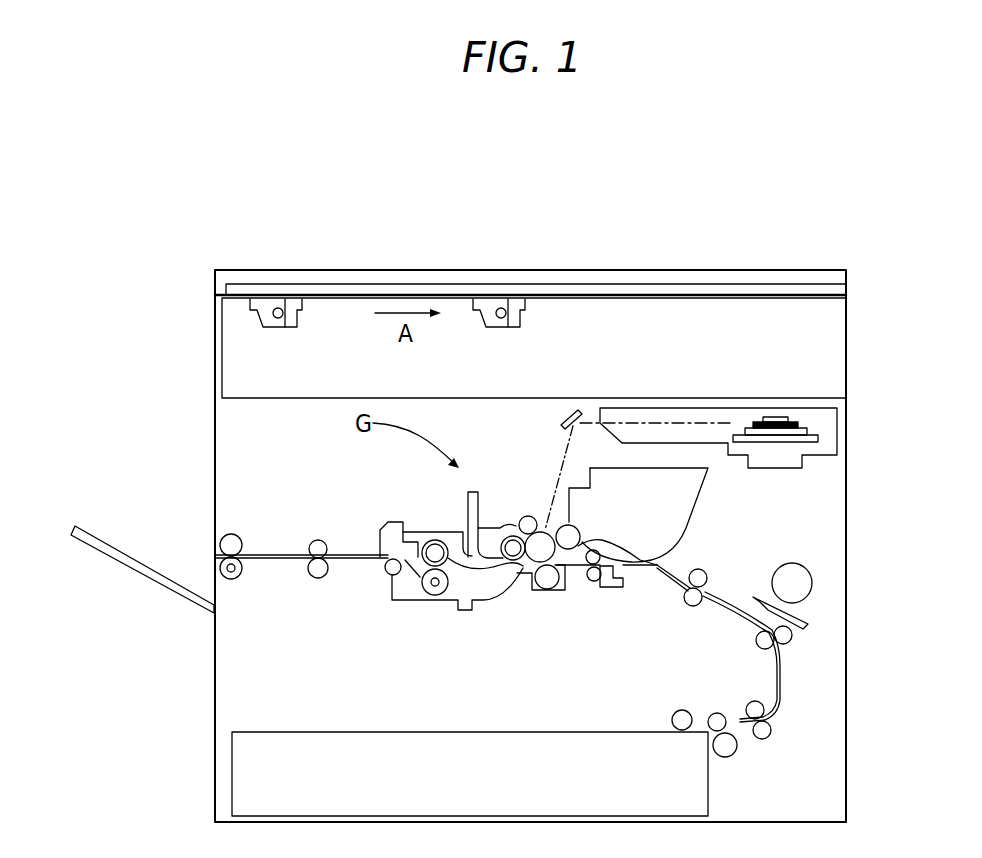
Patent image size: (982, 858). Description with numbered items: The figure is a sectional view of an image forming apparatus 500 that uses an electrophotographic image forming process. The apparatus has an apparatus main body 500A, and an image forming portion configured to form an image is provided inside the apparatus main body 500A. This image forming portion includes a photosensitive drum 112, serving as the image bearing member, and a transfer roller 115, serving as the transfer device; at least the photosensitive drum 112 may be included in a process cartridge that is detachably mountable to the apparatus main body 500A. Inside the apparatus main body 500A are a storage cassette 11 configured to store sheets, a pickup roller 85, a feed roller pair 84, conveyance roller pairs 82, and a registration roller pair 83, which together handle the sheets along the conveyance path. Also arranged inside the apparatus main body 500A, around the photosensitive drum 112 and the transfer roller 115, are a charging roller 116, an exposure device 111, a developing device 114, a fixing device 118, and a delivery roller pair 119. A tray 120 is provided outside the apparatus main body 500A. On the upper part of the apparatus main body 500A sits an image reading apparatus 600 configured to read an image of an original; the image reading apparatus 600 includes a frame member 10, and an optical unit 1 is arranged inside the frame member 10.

The optical unit 1 is at (277, 308).
The frame member 10 is at (213, 317).
The storage cassette 11 is at (410, 817).
The conveyance roller pairs 82 is at (700, 578).
The registration roller pair 83 is at (594, 580).
The feed roller pair 84 is at (717, 720).
The pickup roller 85 is at (682, 720).
The exposure device 111 is at (820, 417).
The photosensitive drum 112 is at (545, 532).
The developing device 114 is at (702, 490).
The transfer roller 115 is at (548, 583).
The charging roller 116 is at (527, 520).
The fixing device 118 is at (437, 538).
The delivery roller pair 119 is at (233, 538).
The tray 120 is at (102, 538).
The image forming apparatus 500 is at (627, 238).
The apparatus main body 500A is at (846, 547).
The image reading apparatus 600 is at (210, 360).